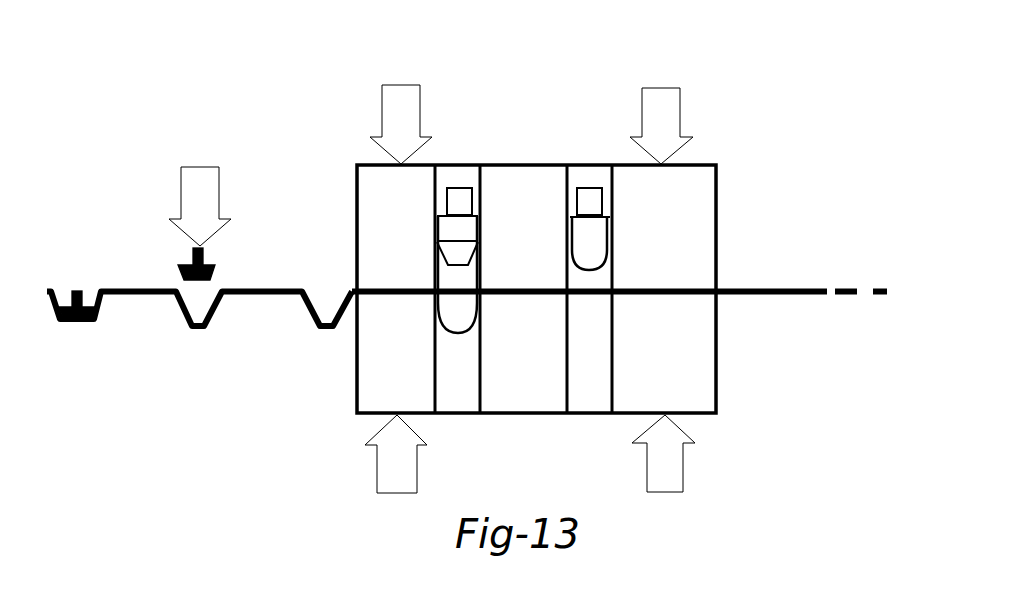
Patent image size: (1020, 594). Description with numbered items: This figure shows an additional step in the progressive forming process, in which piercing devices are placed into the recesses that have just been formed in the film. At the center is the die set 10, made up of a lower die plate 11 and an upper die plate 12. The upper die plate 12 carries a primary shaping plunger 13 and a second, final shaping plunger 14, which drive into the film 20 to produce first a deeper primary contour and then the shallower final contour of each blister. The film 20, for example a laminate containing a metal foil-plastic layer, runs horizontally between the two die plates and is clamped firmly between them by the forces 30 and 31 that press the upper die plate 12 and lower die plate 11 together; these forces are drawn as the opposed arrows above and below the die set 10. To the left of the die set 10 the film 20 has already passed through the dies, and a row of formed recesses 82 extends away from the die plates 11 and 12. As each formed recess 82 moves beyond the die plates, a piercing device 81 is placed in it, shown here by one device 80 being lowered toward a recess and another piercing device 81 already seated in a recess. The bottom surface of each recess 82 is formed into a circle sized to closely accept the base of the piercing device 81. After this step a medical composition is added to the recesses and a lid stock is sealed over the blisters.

The die set 10 is at (323, 387).
The lower die plate 11 is at (690, 377).
The upper die plate 12 is at (662, 193).
The primary shaping plunger 13 is at (601, 233).
The final shaping plunger 14 is at (437, 223).
The film 20 is at (780, 294).
The force 30 is at (662, 107).
The force 31 is at (670, 460).
The fastener 80 is at (182, 166).
The piercing device 81 is at (173, 254).
The formed recess 82 is at (304, 334).